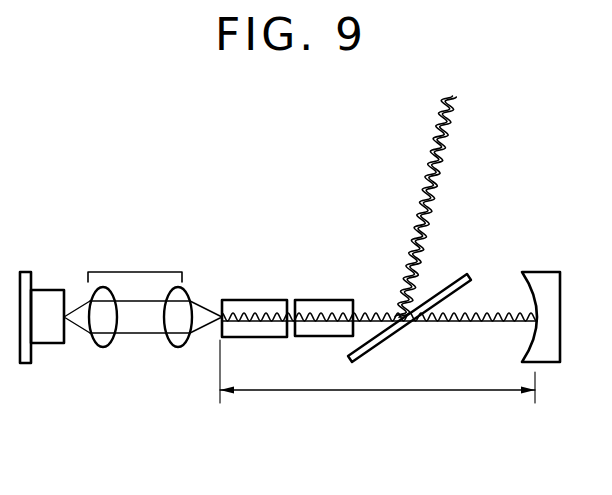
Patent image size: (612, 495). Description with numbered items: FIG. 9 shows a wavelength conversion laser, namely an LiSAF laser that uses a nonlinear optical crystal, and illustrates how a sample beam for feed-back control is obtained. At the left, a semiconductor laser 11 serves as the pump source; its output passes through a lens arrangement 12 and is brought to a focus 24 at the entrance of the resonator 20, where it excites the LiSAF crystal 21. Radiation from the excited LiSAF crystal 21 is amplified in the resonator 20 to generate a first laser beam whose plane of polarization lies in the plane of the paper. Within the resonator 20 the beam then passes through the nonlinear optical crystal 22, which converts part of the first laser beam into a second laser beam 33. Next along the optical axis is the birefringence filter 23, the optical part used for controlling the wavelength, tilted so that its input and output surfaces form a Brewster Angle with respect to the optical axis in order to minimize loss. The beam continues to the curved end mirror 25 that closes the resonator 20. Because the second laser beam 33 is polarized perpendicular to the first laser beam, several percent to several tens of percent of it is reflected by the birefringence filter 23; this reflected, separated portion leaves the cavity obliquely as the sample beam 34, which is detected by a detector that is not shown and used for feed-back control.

The semiconductor laser 11 is at (57, 290).
The lens system 12 is at (143, 272).
The resonator 20 is at (387, 391).
The LiSAF crystal 21 is at (236, 300).
The nonlinear optical crystal 22 is at (326, 300).
The birefringence filter 23 is at (453, 280).
The focused pump beam 24 is at (218, 335).
The curved end mirror 25 is at (537, 323).
The second laser beam 33 is at (488, 316).
The sample beam 34 is at (436, 184).